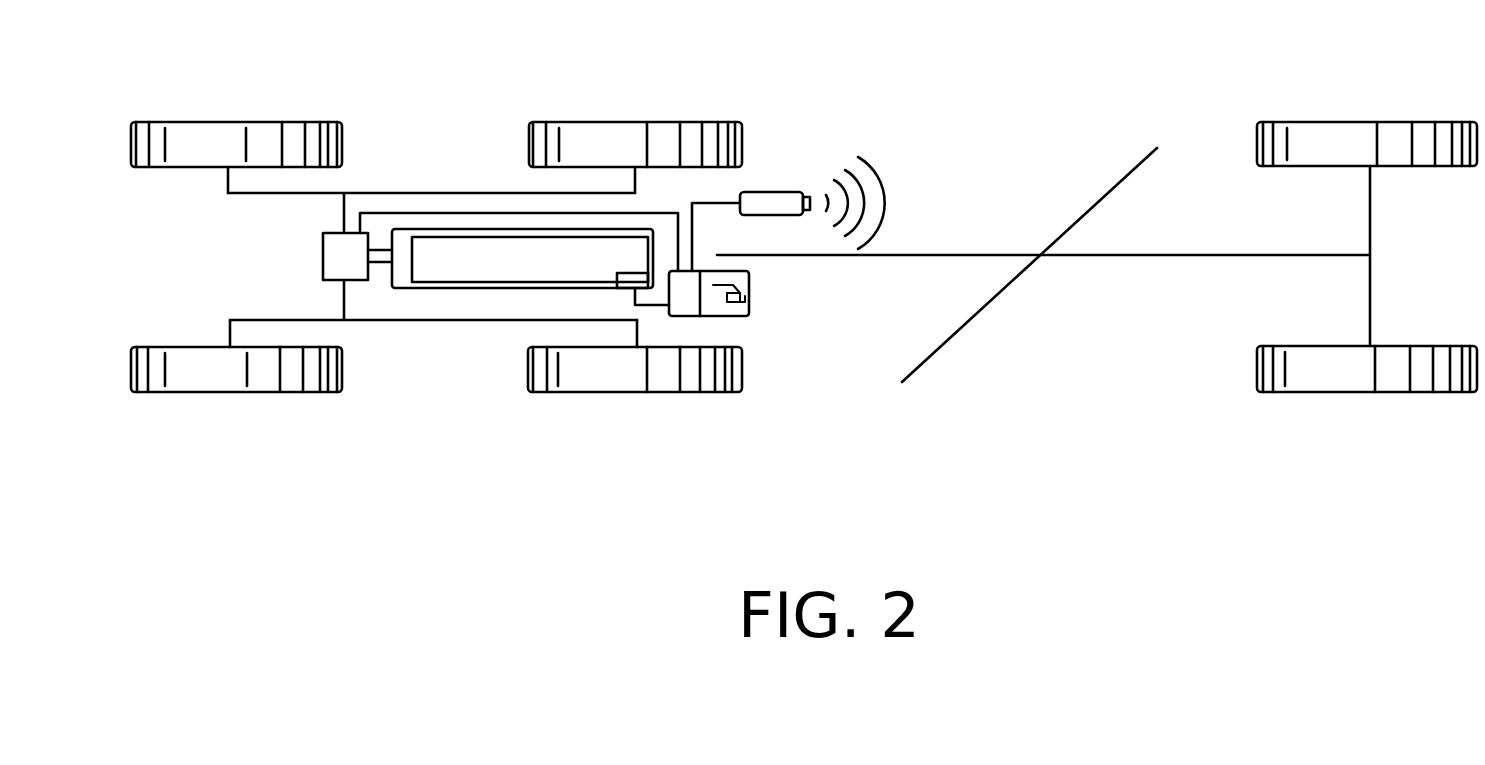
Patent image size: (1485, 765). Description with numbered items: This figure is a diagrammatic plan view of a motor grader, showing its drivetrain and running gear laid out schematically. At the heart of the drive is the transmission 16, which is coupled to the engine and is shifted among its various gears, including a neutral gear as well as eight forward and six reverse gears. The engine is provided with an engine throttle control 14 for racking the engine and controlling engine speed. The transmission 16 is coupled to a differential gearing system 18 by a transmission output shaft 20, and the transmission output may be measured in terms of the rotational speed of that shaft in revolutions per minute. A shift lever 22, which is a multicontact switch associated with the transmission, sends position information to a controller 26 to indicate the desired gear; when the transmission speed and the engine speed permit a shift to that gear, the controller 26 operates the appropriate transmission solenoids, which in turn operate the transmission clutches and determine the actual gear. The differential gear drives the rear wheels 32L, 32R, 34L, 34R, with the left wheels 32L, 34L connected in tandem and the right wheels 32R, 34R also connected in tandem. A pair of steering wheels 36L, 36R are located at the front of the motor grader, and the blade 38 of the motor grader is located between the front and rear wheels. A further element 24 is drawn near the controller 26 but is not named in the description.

The engine throttle control 14 is at (619, 284).
The transmission 16 is at (487, 228).
The differential gearing system 18 is at (323, 257).
The transmission output shaft 20 is at (380, 250).
The shift lever 22 is at (749, 312).
The sensor 24 is at (780, 196).
The controller 26 is at (683, 306).
The left rear wheel 32L is at (627, 130).
The right rear wheel 32R is at (727, 385).
The left rear wheel 34L is at (293, 125).
The right rear wheel 34R is at (296, 380).
The left steering wheel 36L is at (1350, 125).
The right steering wheel 36R is at (1408, 388).
The blade 38 is at (975, 318).